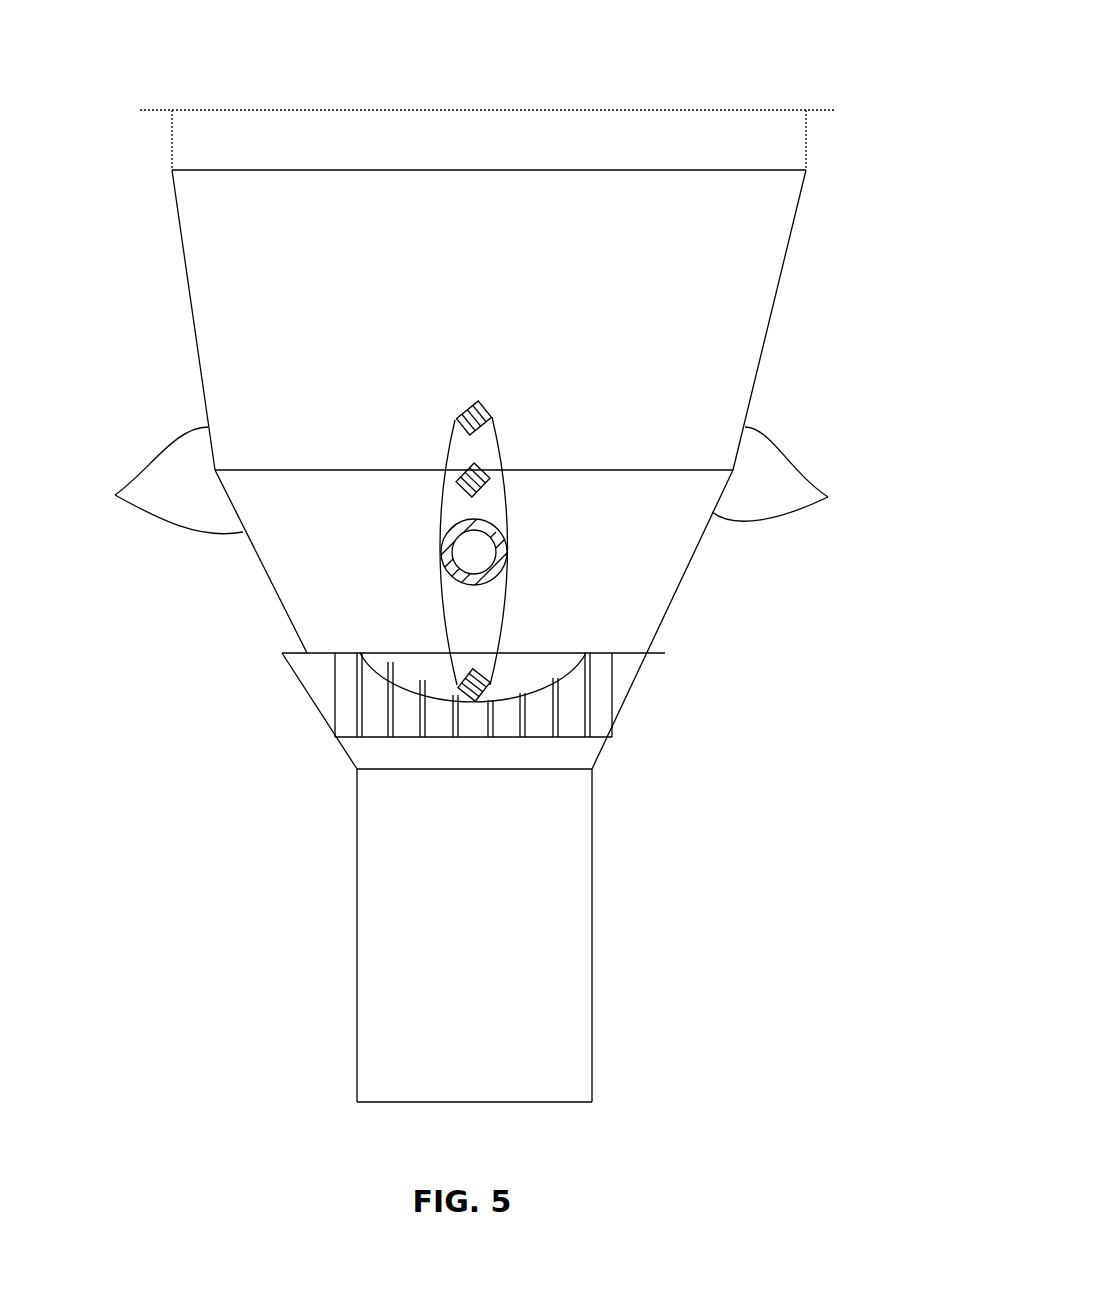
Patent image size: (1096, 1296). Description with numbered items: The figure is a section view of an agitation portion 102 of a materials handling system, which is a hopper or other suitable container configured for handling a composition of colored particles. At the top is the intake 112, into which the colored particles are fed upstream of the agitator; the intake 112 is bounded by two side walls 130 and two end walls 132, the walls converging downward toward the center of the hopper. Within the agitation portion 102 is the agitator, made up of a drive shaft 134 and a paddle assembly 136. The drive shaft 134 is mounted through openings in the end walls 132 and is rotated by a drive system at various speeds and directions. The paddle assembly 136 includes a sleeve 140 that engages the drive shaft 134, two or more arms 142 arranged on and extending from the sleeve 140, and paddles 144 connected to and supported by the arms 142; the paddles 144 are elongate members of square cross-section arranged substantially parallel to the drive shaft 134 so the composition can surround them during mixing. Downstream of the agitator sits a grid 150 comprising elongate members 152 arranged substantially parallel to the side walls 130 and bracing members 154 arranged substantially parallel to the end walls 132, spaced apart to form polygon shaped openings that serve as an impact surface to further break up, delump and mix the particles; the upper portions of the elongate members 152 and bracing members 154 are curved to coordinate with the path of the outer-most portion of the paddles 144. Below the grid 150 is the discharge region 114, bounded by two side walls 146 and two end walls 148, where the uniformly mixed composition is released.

The agitation portion 102 is at (748, 75).
The intake 112 is at (277, 110).
The discharge region 114 is at (562, 1103).
The side walls 130 is at (473, 480).
The end walls 132 is at (455, 291).
The drive shaft 134 is at (478, 555).
The paddle assembly 136 is at (580, 433).
The sleeve 140 is at (507, 530).
The arms 142 is at (447, 488).
The paddles 144 is at (472, 467).
The side walls 146 is at (357, 912).
The end walls 148 is at (455, 951).
The grid 150 is at (593, 640).
The elongate members 152 is at (590, 708).
The bracing members 154 is at (600, 678).